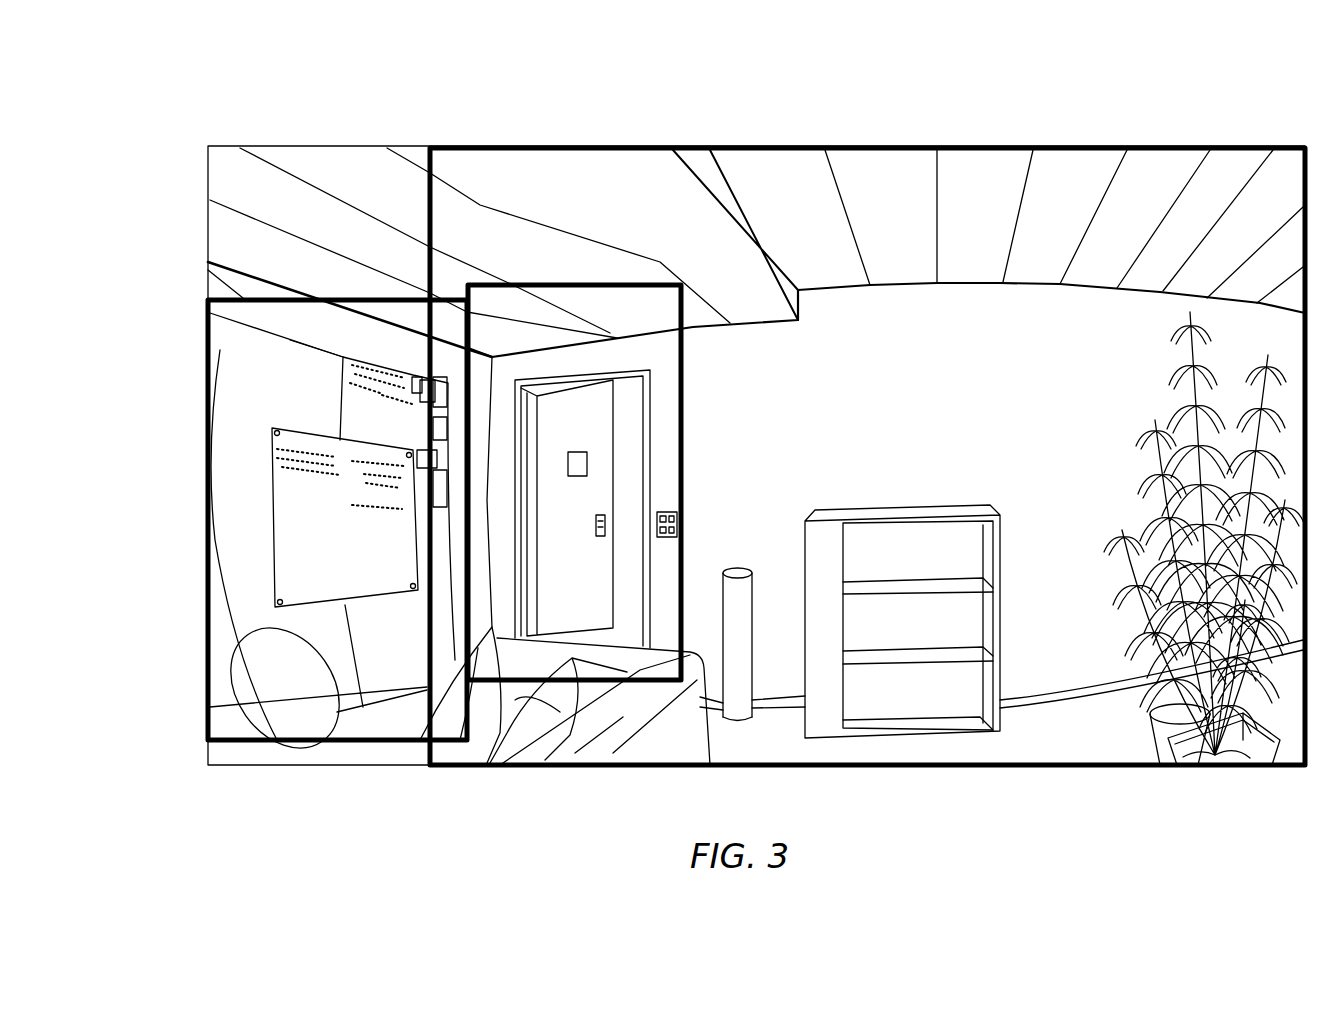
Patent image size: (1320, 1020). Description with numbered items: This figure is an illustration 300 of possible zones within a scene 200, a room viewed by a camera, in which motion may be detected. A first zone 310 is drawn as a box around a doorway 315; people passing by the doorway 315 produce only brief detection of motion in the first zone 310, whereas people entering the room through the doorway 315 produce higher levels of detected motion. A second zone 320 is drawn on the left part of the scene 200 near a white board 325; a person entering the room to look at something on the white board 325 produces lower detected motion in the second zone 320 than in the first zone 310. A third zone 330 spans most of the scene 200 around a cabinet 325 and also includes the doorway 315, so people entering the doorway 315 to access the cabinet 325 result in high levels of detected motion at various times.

The illustration 300 is at (272, 76).
The scene 200 is at (208, 225).
The third zone 330 is at (898, 146).
The second zone 320 is at (208, 270).
The first zone 310 is at (527, 285).
The doorway 315 is at (615, 368).
The white board / cabinet 325 is at (250, 477).